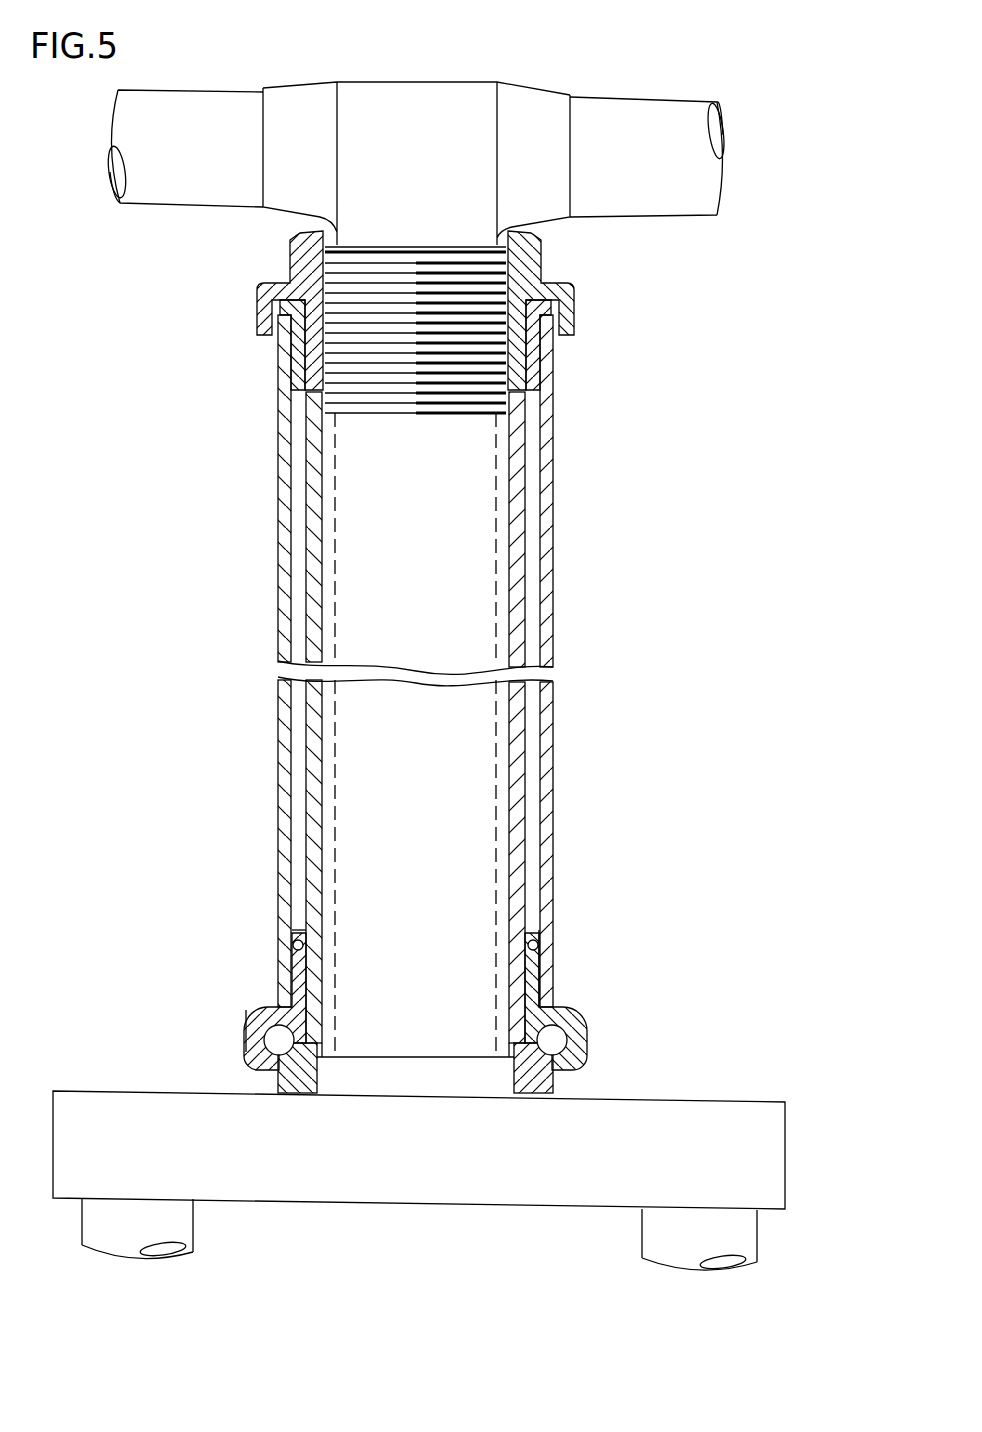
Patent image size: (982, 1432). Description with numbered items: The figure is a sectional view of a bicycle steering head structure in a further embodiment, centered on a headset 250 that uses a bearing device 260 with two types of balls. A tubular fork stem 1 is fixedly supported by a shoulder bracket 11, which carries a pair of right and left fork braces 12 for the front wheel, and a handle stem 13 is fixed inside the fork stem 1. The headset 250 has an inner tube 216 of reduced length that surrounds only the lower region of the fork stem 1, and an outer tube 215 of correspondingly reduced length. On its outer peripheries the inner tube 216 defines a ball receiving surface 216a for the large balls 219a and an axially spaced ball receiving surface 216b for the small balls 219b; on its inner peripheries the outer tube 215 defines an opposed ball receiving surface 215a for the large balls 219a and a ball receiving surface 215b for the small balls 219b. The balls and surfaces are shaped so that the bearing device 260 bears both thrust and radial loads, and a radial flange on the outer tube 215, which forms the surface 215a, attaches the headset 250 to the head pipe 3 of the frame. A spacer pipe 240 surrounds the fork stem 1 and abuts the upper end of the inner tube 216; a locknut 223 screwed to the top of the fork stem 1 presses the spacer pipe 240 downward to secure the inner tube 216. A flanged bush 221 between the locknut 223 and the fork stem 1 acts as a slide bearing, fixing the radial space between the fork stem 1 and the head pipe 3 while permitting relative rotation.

The fork stem 1 is at (505, 735).
The head pipe 3 is at (552, 624).
The shoulder bracket 11 is at (106, 1091).
The fork braces 12 is at (191, 1222).
The handle stem 13 is at (283, 207).
The outer tube 215 is at (582, 1025).
The ball receiving surface 215a is at (256, 1010).
The ball receiving surface 215b is at (307, 943).
The inner tube 216 is at (555, 1088).
The ball receiving surface 216a is at (264, 1038).
The ball receiving surface 216b is at (294, 942).
The large balls 219a is at (560, 1046).
The small balls 219b is at (538, 948).
The flanged bush 221 is at (541, 377).
The locknut 223 is at (541, 262).
The spacer pipe 240 is at (523, 563).
The headset 250 is at (526, 484).
The bearing device 260 is at (572, 1003).